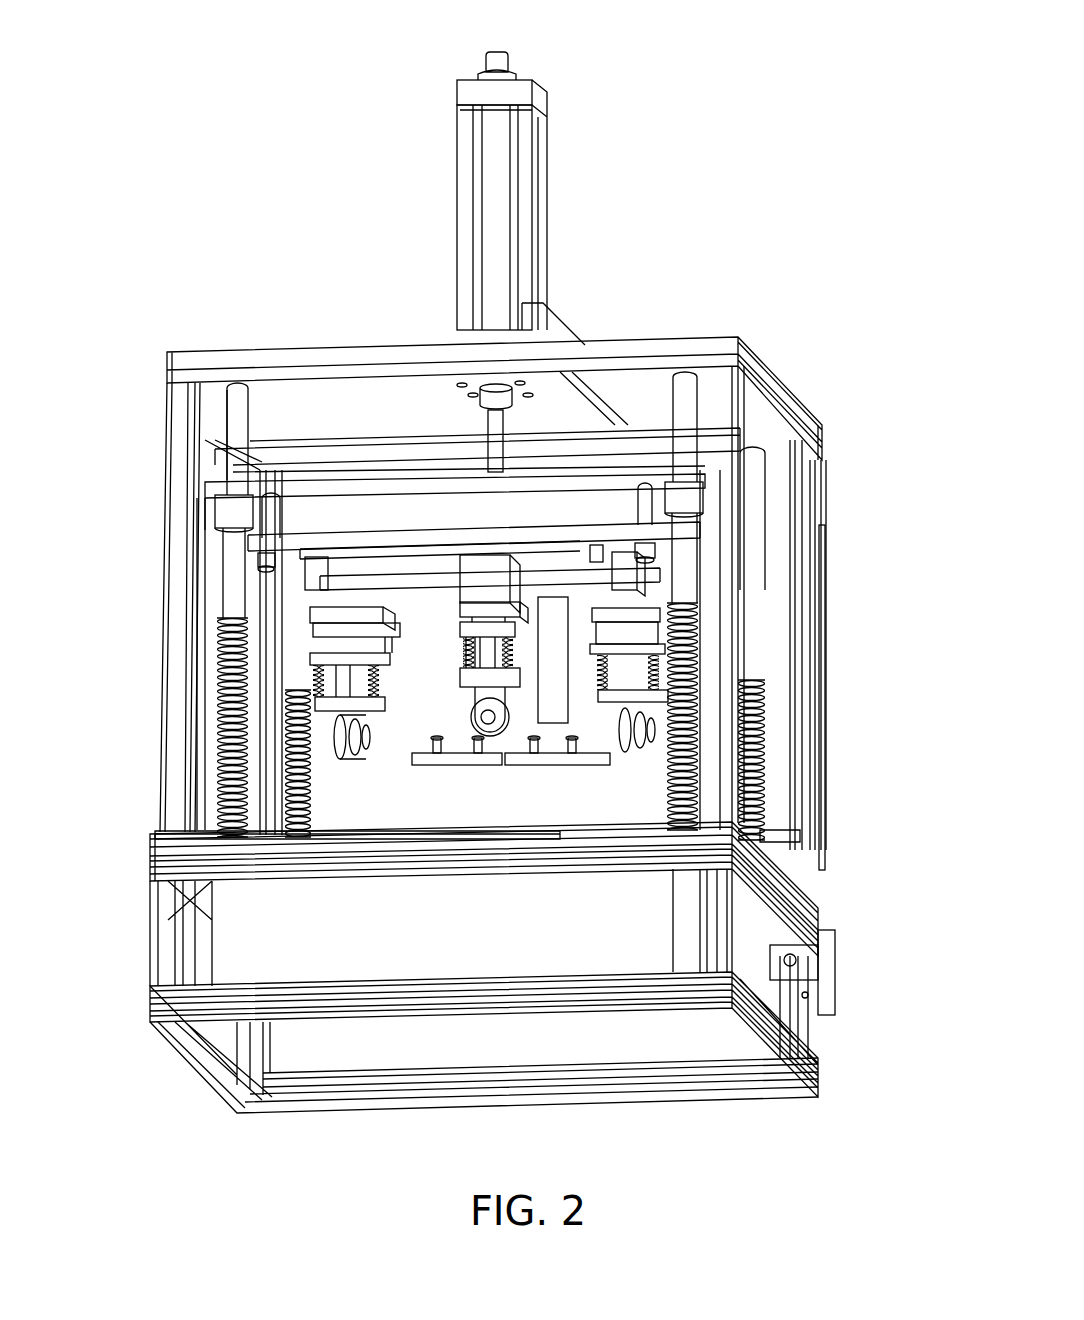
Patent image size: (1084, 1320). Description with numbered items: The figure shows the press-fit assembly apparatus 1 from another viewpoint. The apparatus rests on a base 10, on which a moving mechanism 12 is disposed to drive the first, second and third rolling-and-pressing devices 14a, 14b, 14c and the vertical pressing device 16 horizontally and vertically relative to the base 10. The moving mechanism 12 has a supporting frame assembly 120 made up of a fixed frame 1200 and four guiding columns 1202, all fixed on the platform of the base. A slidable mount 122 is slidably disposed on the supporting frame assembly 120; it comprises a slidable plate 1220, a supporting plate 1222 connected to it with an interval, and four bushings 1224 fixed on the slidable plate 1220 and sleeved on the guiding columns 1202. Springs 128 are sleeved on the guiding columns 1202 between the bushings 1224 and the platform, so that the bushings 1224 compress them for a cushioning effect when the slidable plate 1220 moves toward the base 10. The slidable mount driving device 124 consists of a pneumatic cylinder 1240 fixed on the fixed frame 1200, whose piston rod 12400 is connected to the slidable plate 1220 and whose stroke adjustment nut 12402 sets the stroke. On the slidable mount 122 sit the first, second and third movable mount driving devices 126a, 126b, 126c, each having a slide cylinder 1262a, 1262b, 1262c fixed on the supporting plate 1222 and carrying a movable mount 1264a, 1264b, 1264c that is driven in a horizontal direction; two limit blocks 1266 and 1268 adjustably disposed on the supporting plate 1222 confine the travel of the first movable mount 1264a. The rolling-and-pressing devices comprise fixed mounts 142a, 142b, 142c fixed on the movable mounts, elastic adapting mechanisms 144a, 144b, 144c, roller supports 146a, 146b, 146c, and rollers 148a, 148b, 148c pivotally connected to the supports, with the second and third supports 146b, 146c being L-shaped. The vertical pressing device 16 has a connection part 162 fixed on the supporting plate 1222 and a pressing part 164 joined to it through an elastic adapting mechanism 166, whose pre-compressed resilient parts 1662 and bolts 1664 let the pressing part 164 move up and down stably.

The press-fit assembly apparatus 1 is at (832, 58).
The base 10 is at (376, 830).
The moving mechanism 12 is at (851, 437).
The supporting frame assembly 120 is at (876, 302).
The fixed frame 1200 is at (757, 360).
The guiding columns 1202 is at (757, 480).
The slidable mount 122 is at (348, 258).
The slidable plate 1220 is at (290, 472).
The supporting plate 1222 is at (262, 483).
The bushings 1224 is at (232, 390).
The slidable mount driving device 124 is at (680, 242).
The pneumatic cylinder 1240 is at (513, 186).
The piston rod 12400 is at (555, 350).
The stroke adjustment nut 12402 is at (507, 61).
The first movable mount driving device 126a is at (445, 566).
The second movable mount driving device 126b is at (402, 675).
The third movable mount driving device 126c is at (556, 520).
The first slide cylinder 1262a is at (340, 492).
The second slide cylinder 1262b is at (352, 490).
The third slide cylinder 1262c is at (640, 590).
The first movable mount 1264a is at (430, 580).
The second movable mount 1264b is at (262, 556).
The third movable mount 1264c is at (660, 600).
The limit block 1266 is at (228, 510).
The limit block 1268 is at (598, 530).
The springs 128 is at (765, 836).
The first rolling-and-pressing device 14a is at (520, 922).
The first fixed mount 142a is at (455, 745).
The first elastic adapting mechanism 144a is at (525, 690).
The first roller support 146a is at (468, 700).
The first roller 148a is at (500, 740).
The second rolling-and-pressing device 14b is at (112, 546).
The second fixed mount 142b is at (300, 600).
The second elastic adapting mechanism 144b is at (250, 640).
The second roller support 146b is at (245, 705).
The second roller 148b is at (282, 760).
The third rolling-and-pressing device 14c is at (878, 653).
The third fixed mount 142c is at (698, 613).
The third elastic adapting mechanism 144c is at (700, 698).
The third roller support 146c is at (745, 703).
The third roller 148c is at (690, 746).
The vertical pressing device 16 is at (660, 910).
The connection part 162 is at (562, 745).
The pressing part 164 is at (582, 738).
The elastic adapting mechanism 166 is at (572, 762).
The resilient parts 1662 is at (442, 760).
The bolts 1664 is at (432, 735).